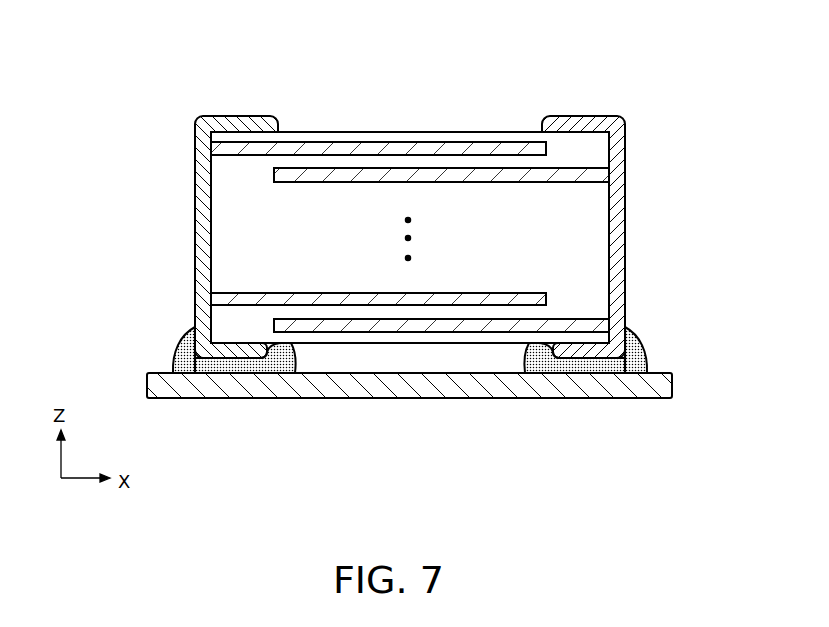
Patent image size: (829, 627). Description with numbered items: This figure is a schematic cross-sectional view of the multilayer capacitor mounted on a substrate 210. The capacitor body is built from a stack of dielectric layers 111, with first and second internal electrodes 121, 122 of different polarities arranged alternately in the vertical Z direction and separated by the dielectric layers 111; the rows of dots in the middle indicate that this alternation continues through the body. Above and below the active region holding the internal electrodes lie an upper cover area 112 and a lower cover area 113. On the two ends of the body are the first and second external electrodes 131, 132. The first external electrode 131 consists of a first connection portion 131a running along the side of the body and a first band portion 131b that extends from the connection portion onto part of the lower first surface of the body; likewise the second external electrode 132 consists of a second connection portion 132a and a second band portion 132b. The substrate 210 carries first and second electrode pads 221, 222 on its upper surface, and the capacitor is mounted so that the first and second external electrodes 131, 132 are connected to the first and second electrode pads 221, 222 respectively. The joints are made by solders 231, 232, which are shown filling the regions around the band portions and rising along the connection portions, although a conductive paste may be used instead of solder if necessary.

The dielectric layer 111 is at (480, 313).
The upper cover area 112 is at (417, 134).
The lower cover area 113 is at (417, 342).
The first internal electrode 121 is at (255, 150).
The second internal electrode 122 is at (523, 321).
The first external electrode 131 is at (160, 237).
The first connection portion 131a is at (197, 254).
The first band portion 131b is at (242, 352).
The second external electrode 132 is at (662, 237).
The second connection portion 132a is at (623, 254).
The second band portion 132b is at (578, 352).
The substrate 210 is at (327, 378).
The first electrode pad 221 is at (236, 370).
The second electrode pad 222 is at (590, 368).
The solder 231 is at (178, 372).
The solder 232 is at (642, 370).